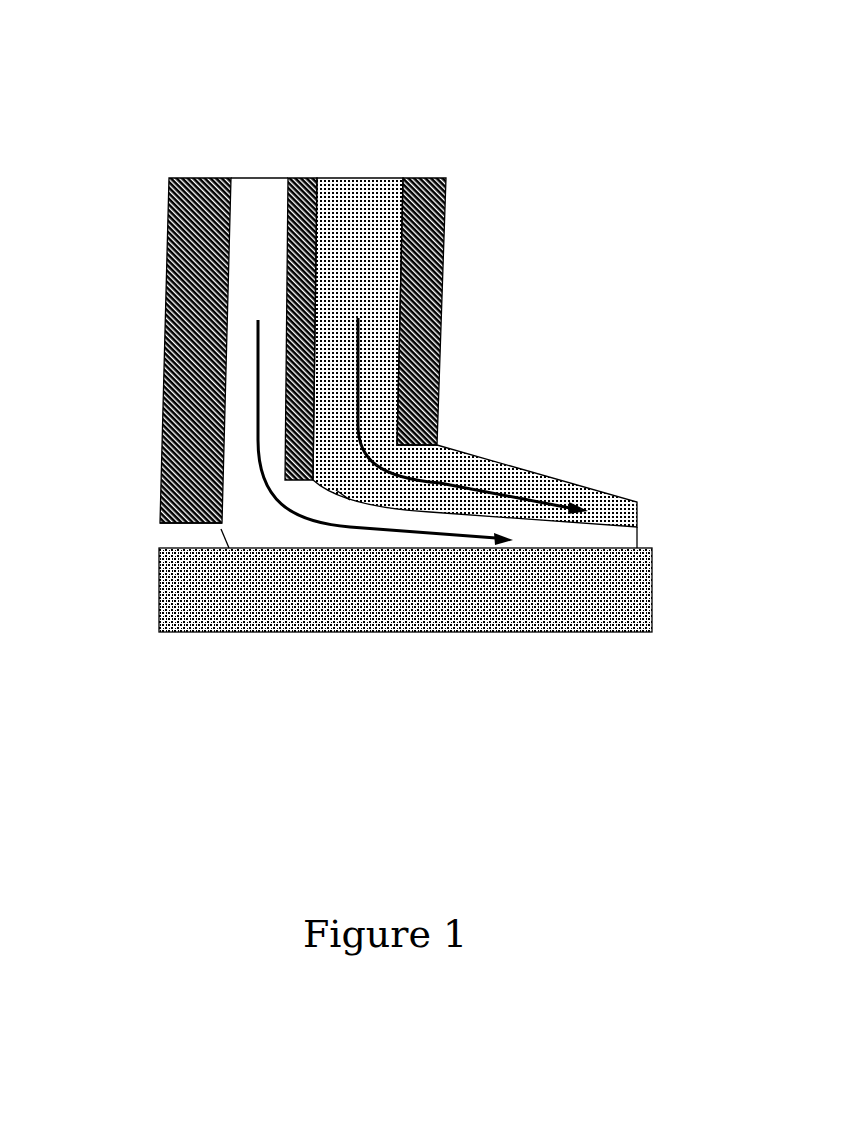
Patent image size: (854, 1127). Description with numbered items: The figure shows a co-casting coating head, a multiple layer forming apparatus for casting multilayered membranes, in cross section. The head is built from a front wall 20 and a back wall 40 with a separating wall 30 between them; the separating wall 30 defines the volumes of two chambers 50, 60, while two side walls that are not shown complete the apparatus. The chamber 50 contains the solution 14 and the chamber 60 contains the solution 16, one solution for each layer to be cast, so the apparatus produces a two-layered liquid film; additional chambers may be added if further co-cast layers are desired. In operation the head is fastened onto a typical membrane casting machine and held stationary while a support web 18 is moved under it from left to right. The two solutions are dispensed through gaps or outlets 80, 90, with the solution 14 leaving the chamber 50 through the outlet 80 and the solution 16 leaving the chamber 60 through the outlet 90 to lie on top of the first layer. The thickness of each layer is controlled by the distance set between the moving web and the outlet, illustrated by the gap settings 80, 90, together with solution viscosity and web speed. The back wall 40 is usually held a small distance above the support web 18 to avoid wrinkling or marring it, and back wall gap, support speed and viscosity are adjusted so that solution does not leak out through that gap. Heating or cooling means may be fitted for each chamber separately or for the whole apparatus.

The solution 14 is at (263, 160).
The solution 16 is at (370, 160).
The support web 18 is at (598, 612).
The front wall 20 is at (442, 327).
The separating wall 30 is at (302, 178).
The back wall 40 is at (165, 400).
The chamber 50 is at (247, 178).
The chamber 60 is at (382, 287).
The outlet 80 is at (243, 507).
The outlet 90 is at (342, 478).